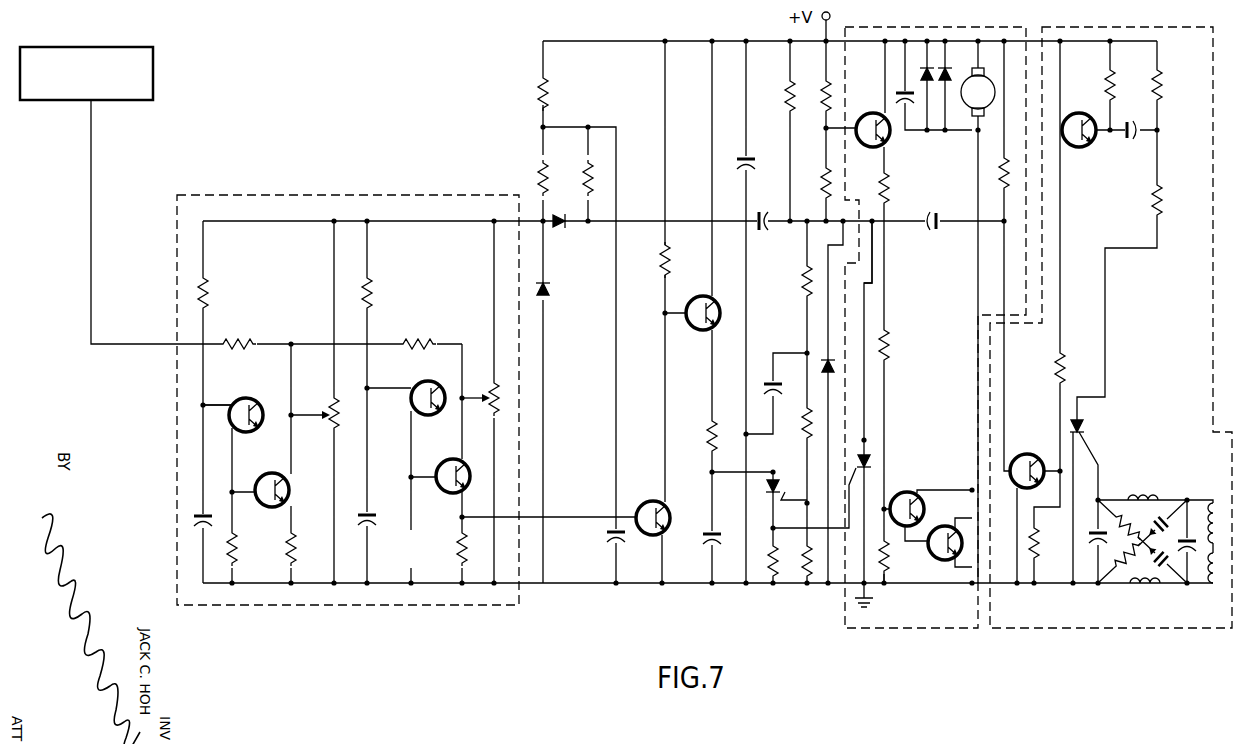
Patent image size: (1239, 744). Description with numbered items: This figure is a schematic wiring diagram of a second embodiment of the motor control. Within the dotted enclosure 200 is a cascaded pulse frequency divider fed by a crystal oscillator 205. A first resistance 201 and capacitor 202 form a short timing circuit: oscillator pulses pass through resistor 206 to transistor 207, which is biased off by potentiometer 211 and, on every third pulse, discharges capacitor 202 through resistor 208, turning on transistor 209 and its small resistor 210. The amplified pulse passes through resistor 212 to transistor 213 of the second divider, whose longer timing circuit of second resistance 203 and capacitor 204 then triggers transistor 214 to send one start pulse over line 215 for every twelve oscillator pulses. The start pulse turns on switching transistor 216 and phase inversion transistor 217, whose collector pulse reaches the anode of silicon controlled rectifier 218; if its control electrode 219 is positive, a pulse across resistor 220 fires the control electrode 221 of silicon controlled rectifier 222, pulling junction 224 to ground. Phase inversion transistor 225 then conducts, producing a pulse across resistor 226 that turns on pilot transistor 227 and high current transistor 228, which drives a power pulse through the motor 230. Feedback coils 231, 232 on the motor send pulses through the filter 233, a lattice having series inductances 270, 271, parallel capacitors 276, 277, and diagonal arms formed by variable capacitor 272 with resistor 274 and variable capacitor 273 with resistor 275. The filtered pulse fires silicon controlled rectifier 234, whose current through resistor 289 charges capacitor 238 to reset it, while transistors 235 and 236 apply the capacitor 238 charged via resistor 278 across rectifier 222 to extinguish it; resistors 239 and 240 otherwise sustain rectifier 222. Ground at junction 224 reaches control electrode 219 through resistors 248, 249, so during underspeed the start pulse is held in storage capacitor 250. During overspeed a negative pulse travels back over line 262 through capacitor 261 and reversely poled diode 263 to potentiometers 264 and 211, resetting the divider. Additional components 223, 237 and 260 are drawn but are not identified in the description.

The frequency divider circuit 200 is at (318, 195).
The first resistance 201 is at (212, 306).
The capacitor 202 is at (175, 514).
The second resistance 203 is at (376, 304).
The capacitor 204 is at (378, 508).
The crystal oscillator 205 is at (155, 82).
The resistor 206 is at (238, 339).
The transistor 207 is at (259, 400).
The small resistor 208 is at (240, 546).
The transistor 209 is at (290, 485).
The small resistor 210 is at (285, 556).
The potentiometer 211 is at (329, 426).
The resistor 212 is at (423, 340).
The transistor 213 is at (415, 392).
The transistor 214 is at (439, 461).
The output line 215 is at (459, 520).
The switching transistor 216 is at (652, 500).
The phase inversion switching transistor 217 is at (698, 308).
The silicon controlled rectifier 218 is at (779, 481).
The control electrode 219 is at (779, 497).
The resistor 220 is at (773, 582).
The control electrode 221 is at (864, 478).
The silicon controlled rectifier 222 is at (866, 471).
The resistor 223 is at (706, 429).
The junction 224 is at (887, 204).
The phase inversion transistor 225 is at (866, 112).
The resistor 226 is at (886, 572).
The pilot transistor 227 is at (885, 547).
The high current transistor 228 is at (931, 558).
The motor 230 is at (975, 116).
The feedback coil 231 is at (1213, 504).
The feedback coil 232 is at (1214, 589).
The filter network 233 is at (1146, 485).
The silicon controlled rectifier 234 is at (1084, 426).
The phase inversion transistor 235 is at (1092, 112).
The switching transistor 236 is at (1040, 457).
The resistor 237 is at (1112, 80).
The capacitor 238 is at (939, 217).
The resistor 239 is at (790, 92).
The paralleled resistor 240 is at (823, 172).
The resistor 248 is at (803, 282).
The resistor 249 is at (801, 426).
The storage capacitor 250 is at (702, 541).
The resistor 260 is at (807, 582).
The capacitor 261 is at (760, 211).
The line 262 is at (878, 222).
The reversely poled diode 263 is at (558, 216).
The potentiometer 264 is at (492, 385).
The series inductance 270 is at (1136, 495).
The series inductance 271 is at (1138, 590).
The variable capacitor 272 is at (1166, 514).
The variable capacitor 273 is at (1163, 570).
The resistor 274 is at (1115, 566).
The resistor 275 is at (1110, 521).
The capacitor 276 is at (1096, 541).
The capacitor 277 is at (1188, 554).
The resistor 278 is at (1002, 181).
The resistor 289 is at (1150, 207).